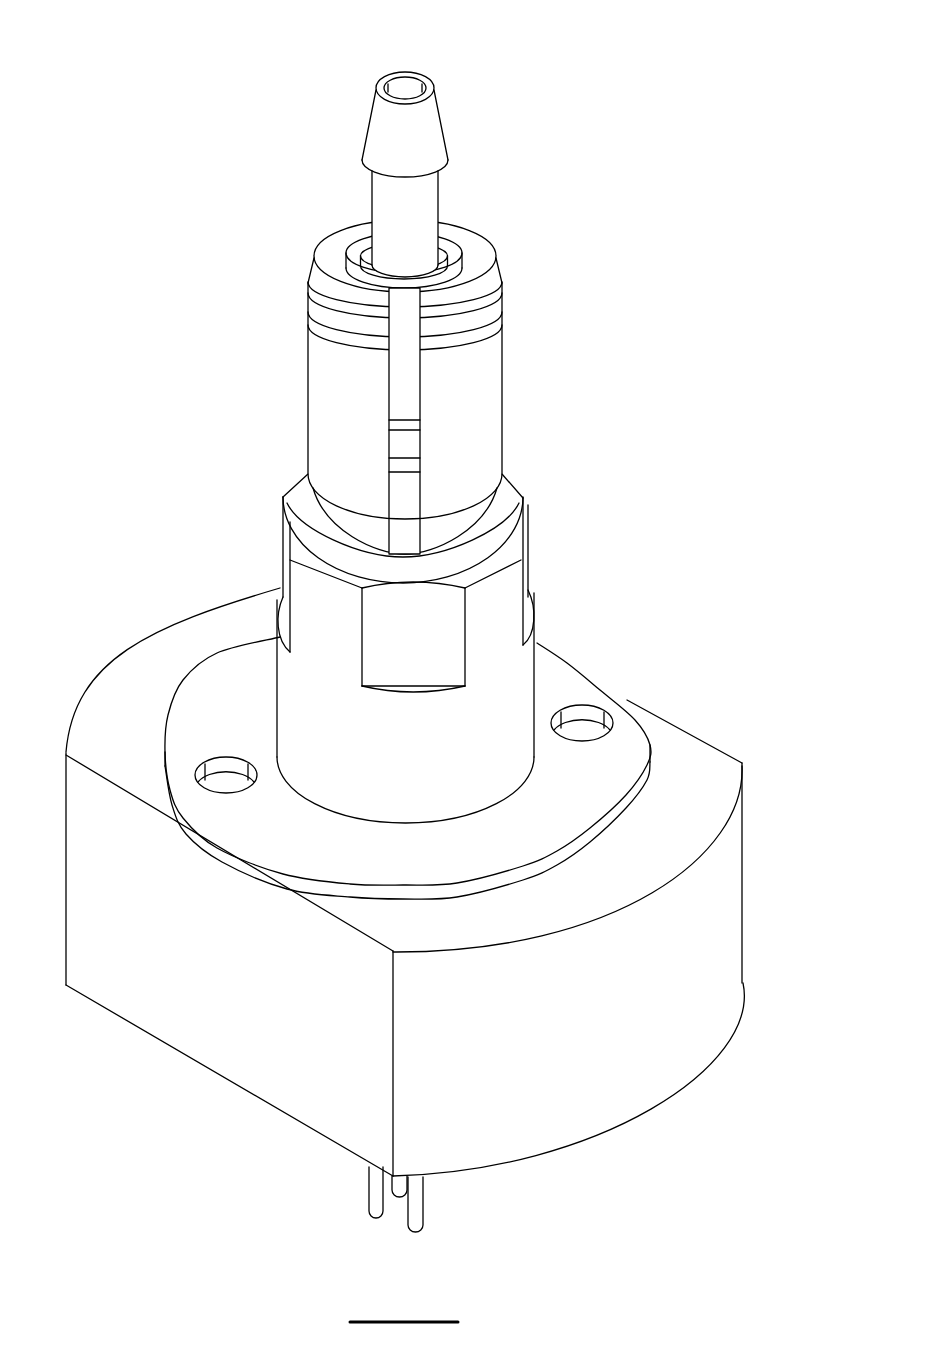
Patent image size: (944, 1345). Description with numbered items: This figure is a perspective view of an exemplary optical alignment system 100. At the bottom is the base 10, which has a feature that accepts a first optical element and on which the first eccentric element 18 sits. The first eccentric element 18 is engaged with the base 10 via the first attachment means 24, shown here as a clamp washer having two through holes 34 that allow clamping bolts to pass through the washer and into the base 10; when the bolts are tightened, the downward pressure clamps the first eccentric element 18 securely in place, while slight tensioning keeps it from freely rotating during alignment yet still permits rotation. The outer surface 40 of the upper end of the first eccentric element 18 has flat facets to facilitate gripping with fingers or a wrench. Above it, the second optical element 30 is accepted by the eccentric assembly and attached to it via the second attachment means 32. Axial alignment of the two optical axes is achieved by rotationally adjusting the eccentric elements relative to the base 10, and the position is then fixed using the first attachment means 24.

The alignment system 100 is at (472, 56).
The base 10 is at (738, 908).
The first eccentric element 18 is at (510, 660).
The first attachment means 24 is at (195, 717).
The through holes 34 is at (585, 733).
The second optical element 30 is at (461, 201).
The second attachment means 32 is at (495, 405).
The outer surface 40 is at (292, 558).